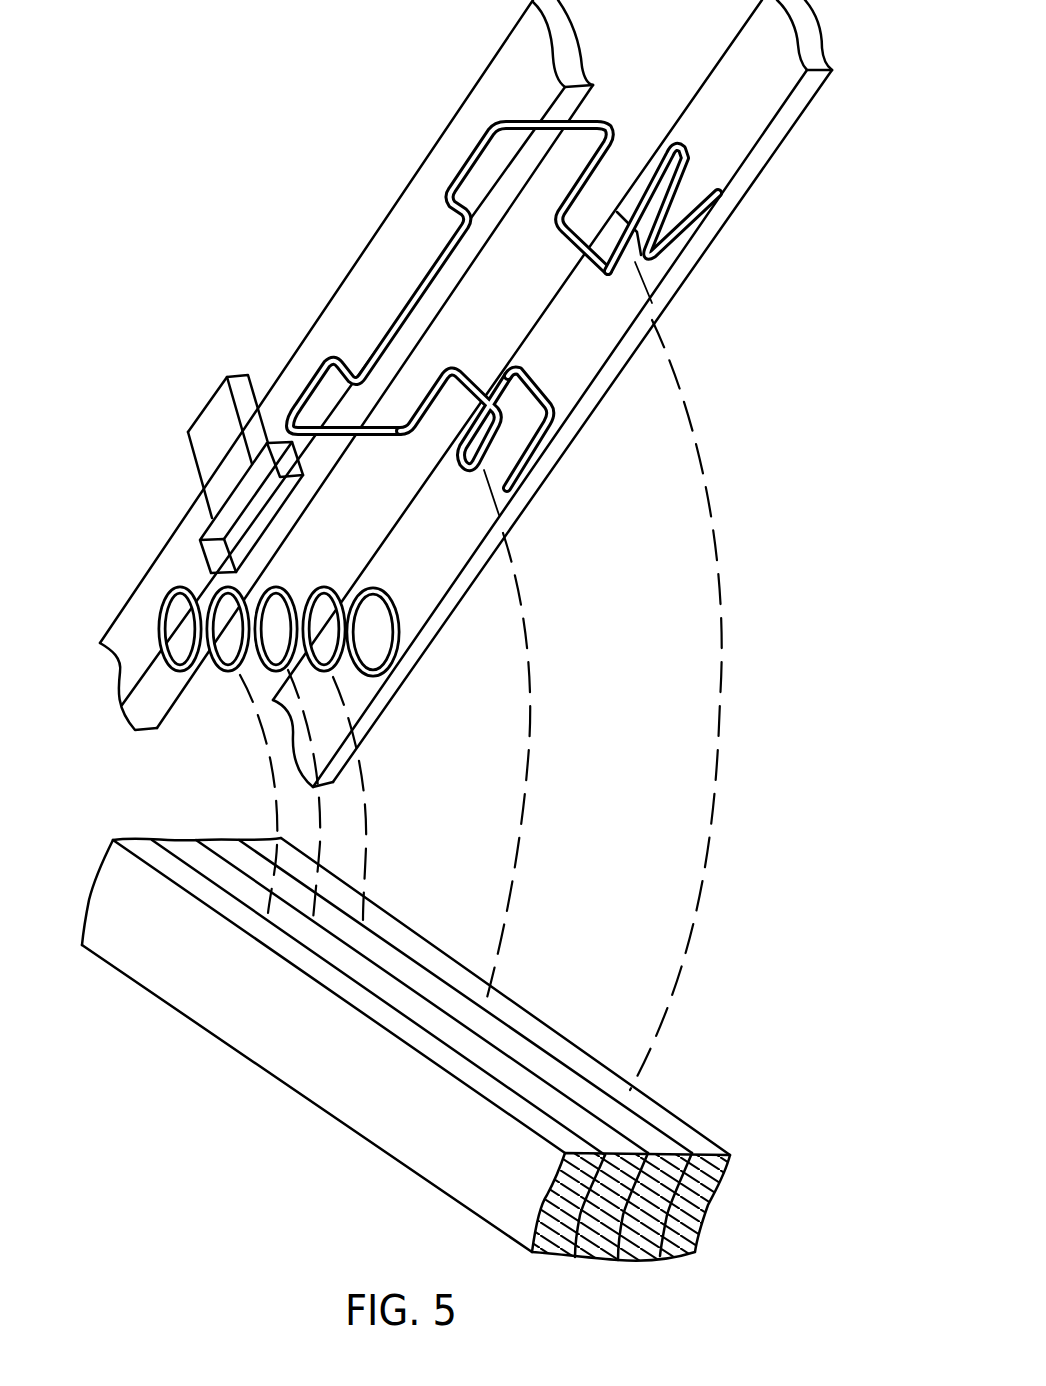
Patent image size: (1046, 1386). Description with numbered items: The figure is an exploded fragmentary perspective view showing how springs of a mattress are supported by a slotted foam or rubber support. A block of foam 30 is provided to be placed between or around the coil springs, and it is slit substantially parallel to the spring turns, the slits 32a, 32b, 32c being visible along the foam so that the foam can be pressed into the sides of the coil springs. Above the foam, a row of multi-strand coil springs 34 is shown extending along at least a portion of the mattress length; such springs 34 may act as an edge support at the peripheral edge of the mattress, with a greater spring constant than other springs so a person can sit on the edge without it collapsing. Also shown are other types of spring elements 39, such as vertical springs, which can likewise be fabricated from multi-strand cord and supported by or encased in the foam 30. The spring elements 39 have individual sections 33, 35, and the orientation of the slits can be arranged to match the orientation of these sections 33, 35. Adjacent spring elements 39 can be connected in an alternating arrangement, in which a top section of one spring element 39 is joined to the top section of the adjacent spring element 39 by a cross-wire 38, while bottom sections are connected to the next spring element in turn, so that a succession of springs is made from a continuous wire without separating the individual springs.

The foam 30 is at (330, 1046).
The slit 32a is at (657, 1127).
The slit 32b is at (510, 1053).
The slit 32c is at (380, 932).
The section of spring element 33 is at (313, 442).
The multi-strand coil spring 34 is at (389, 668).
The section of spring element 35 is at (419, 408).
The cross-wire 38 is at (441, 255).
The spring element 39 is at (664, 142).